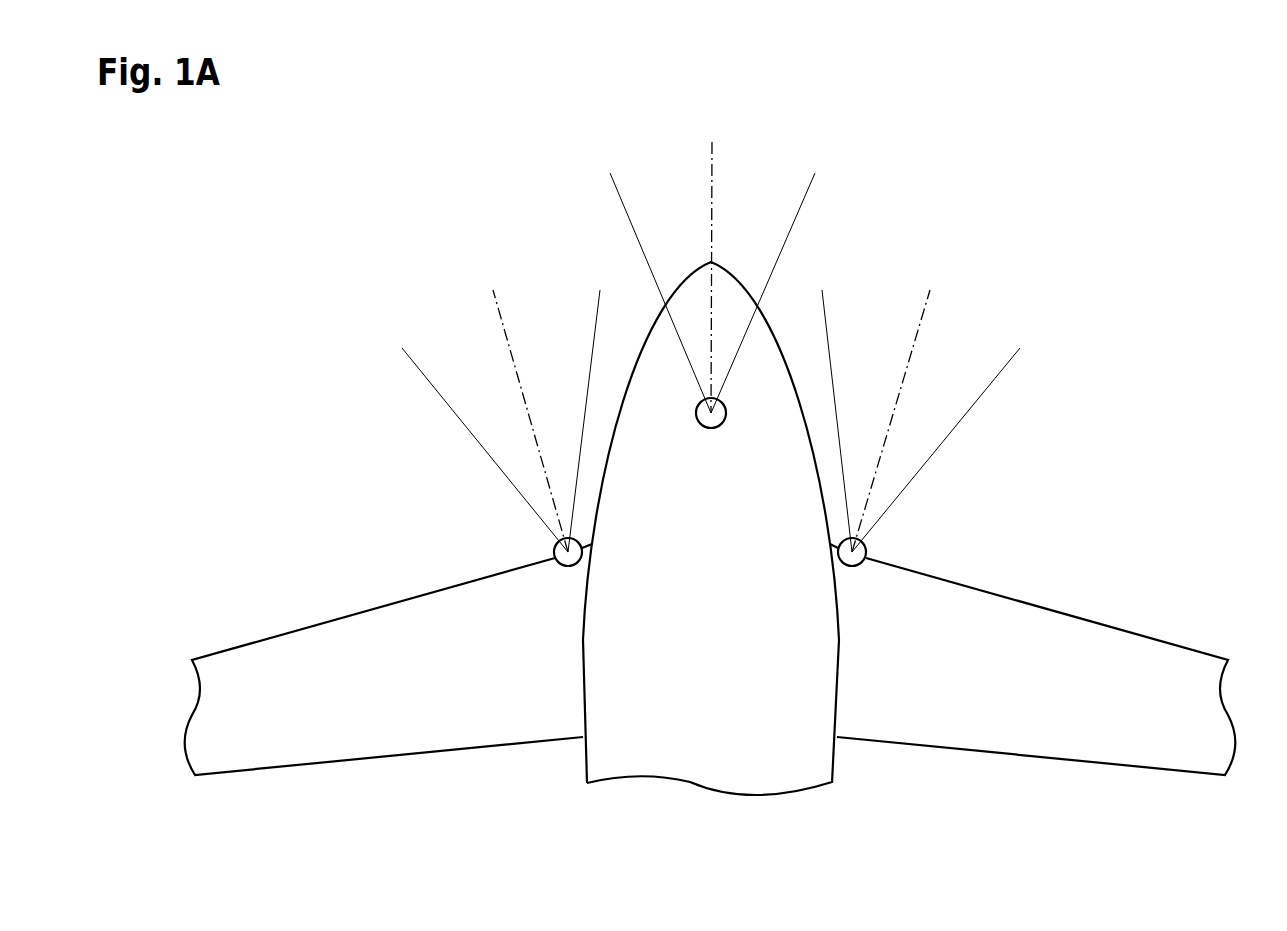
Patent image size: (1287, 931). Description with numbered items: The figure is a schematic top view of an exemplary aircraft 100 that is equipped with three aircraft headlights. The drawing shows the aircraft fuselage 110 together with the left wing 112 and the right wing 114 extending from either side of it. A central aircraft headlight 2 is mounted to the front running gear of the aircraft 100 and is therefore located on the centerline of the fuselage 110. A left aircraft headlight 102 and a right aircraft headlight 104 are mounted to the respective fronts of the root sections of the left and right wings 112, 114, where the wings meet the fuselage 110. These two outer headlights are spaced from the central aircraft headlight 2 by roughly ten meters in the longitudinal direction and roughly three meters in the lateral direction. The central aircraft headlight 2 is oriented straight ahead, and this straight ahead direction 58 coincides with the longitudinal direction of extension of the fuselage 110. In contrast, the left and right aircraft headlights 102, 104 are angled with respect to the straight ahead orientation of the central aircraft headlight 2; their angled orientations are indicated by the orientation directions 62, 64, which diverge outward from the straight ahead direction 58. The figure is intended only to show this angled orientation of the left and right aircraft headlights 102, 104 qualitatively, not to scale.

The aircraft 100 is at (1077, 397).
The aircraft fuselage 110 is at (582, 758).
The left wing 112 is at (292, 630).
The right wing 114 is at (1132, 630).
The central aircraft headlight 2 is at (711, 428).
The left aircraft headlight 102 is at (557, 570).
The right aircraft headlight 104 is at (860, 570).
The straight ahead direction 58 is at (712, 153).
The orientation direction of the left aircraft headlight 62 is at (500, 314).
The orientation direction of the right aircraft headlight 64 is at (920, 318).